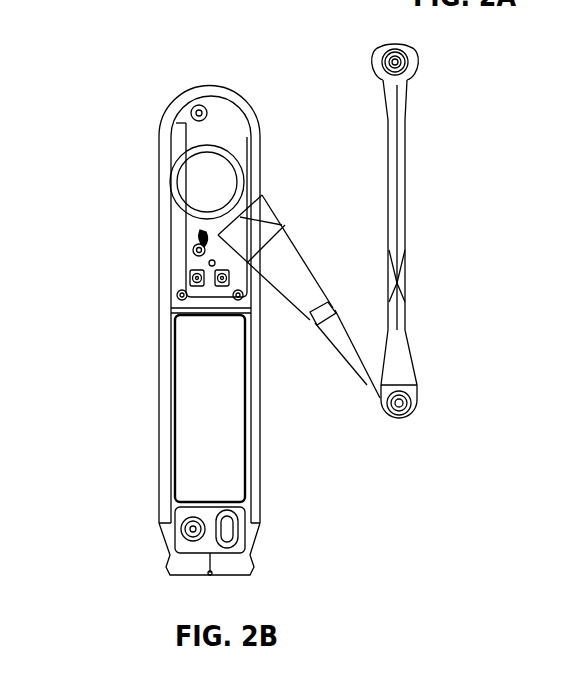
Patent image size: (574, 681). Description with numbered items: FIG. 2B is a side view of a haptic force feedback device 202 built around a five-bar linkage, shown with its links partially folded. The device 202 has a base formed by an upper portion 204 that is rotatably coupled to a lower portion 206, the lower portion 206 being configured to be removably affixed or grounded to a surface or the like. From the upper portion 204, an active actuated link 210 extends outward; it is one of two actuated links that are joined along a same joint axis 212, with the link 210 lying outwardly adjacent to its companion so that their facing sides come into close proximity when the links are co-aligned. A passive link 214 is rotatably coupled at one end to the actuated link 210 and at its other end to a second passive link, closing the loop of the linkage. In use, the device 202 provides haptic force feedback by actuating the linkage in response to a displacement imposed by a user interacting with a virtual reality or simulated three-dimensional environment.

The haptic device 202 is at (118, 64).
The upper portion 204 is at (160, 220).
The lower portion 206 is at (160, 418).
The actuated link 210 is at (287, 258).
The joint axis 212 is at (208, 185).
The passive link 214 is at (398, 222).